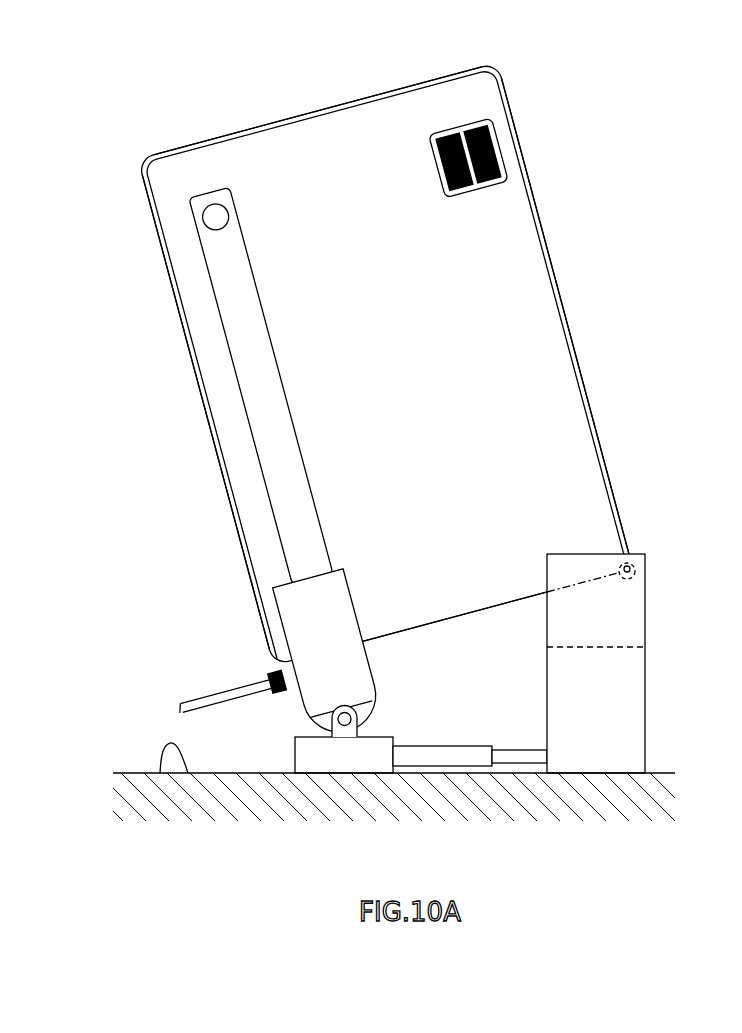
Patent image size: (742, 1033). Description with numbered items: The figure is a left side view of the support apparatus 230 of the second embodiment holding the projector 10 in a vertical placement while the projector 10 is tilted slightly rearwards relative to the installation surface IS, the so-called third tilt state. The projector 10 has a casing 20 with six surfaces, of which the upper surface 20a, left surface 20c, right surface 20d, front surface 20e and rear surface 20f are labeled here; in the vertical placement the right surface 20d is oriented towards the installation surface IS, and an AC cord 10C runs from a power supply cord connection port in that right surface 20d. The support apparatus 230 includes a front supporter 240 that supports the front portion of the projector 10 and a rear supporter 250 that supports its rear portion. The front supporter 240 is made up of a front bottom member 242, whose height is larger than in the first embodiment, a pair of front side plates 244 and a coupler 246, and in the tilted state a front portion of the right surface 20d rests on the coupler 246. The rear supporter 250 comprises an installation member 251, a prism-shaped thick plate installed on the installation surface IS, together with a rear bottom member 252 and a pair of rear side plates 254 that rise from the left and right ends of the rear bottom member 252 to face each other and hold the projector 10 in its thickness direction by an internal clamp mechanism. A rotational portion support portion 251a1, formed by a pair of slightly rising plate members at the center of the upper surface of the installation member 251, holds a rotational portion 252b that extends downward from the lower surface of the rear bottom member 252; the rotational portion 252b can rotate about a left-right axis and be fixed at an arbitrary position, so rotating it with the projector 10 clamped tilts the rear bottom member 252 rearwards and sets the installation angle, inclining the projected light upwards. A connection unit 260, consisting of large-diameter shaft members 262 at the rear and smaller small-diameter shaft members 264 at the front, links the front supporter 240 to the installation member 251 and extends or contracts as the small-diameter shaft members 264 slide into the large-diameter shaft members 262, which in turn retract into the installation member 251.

The projector 10 is at (388, 443).
The casing 20 is at (388, 377).
The upper surface 20a is at (332, 327).
The left surface 20c is at (310, 112).
The right surface 20d is at (498, 605).
The front surface 20e is at (553, 270).
The rear surface 20f is at (215, 455).
The AC cord 10C is at (230, 688).
The rear bottom member 252 is at (305, 660).
The rotational portion 252b is at (322, 718).
The rear side plates 254 is at (310, 613).
The rear supporter 250 is at (326, 789).
The installation member 251 is at (326, 789).
The rotational portion support portion 251a1 is at (345, 730).
The connection unit 260 is at (470, 768).
The large-diameter shaft members 262 is at (452, 755).
The small-diameter shaft members 264 is at (520, 758).
The front supporter 240 is at (636, 705).
The front bottom member 242 is at (607, 710).
The front side plates 244 is at (597, 612).
The coupler 246 is at (640, 578).
The support apparatus 230 is at (472, 720).
The installation surface IS is at (163, 775).